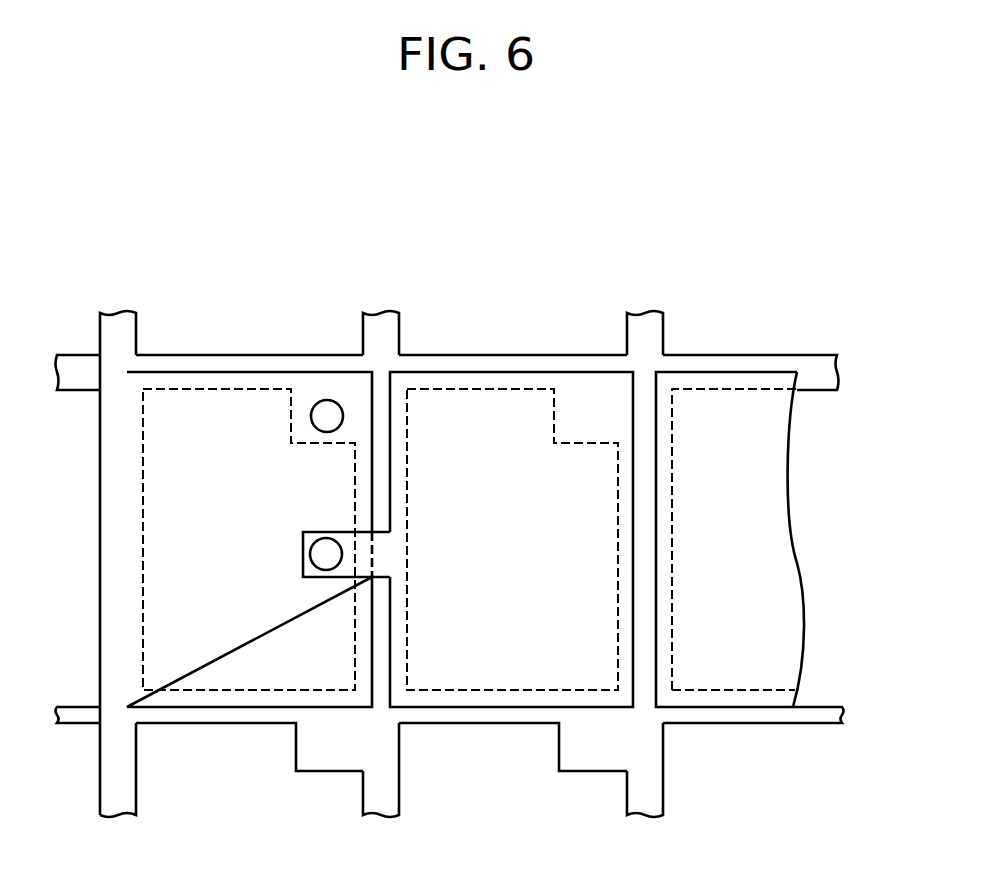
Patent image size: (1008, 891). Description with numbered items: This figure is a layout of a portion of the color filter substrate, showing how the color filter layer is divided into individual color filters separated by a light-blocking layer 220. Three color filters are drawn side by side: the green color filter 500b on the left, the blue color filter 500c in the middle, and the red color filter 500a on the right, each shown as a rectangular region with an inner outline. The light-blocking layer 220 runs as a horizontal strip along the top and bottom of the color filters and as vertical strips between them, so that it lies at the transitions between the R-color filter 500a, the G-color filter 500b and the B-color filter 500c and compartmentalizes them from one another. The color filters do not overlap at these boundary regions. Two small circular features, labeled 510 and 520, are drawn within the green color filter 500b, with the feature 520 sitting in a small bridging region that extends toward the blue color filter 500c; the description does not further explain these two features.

The light-blocking layer 220 is at (575, 360).
The red color filter 500a is at (724, 372).
The green color filter 500b is at (197, 372).
The blue color filter 500c is at (479, 372).
The first contact hole 510 is at (326, 400).
The second contact hole 520 is at (311, 565).